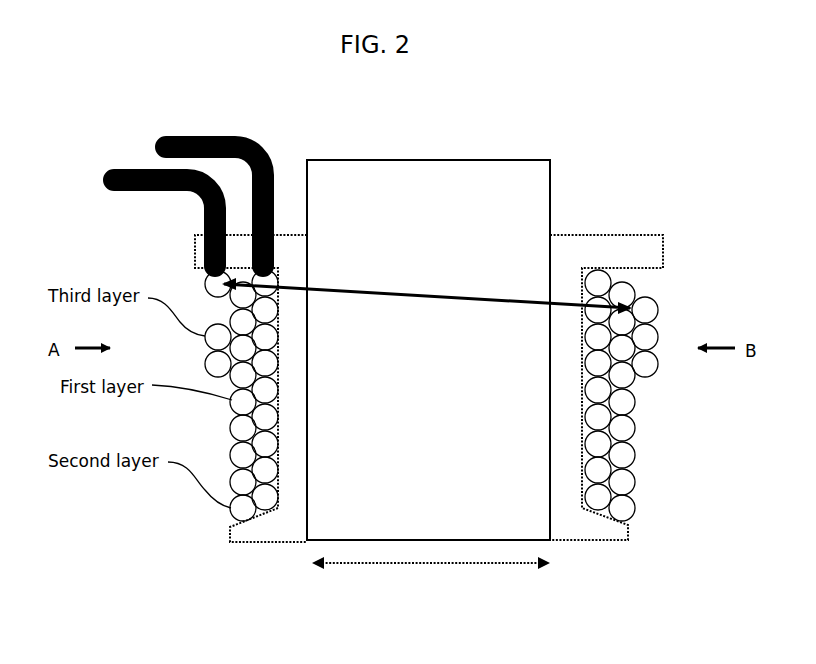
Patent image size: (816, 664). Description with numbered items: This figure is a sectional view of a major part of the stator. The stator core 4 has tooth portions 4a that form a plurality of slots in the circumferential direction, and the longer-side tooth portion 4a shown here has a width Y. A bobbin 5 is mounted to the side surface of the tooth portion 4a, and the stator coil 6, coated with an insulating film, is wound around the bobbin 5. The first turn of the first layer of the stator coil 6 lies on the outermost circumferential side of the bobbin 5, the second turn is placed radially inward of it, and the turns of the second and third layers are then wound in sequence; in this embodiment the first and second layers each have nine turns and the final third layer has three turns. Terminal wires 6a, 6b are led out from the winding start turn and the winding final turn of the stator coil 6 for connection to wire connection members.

The stator core 4 is at (428, 172).
The tooth portion 4a is at (432, 505).
The bobbin 5 is at (588, 235).
The stator coil 6 is at (658, 337).
The terminal wire 6a is at (178, 135).
The terminal wire 6b is at (113, 177).
The width Y is at (448, 565).